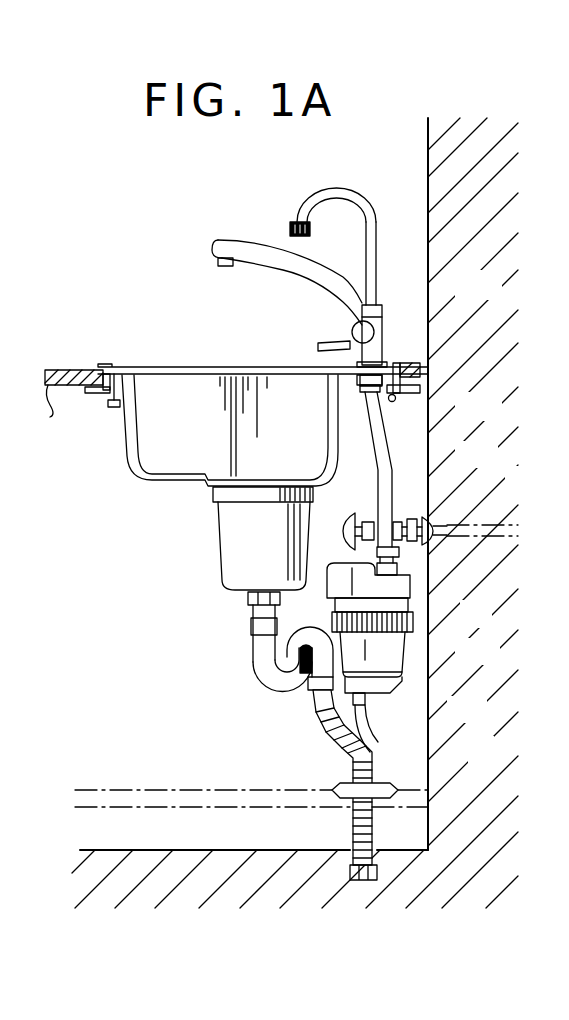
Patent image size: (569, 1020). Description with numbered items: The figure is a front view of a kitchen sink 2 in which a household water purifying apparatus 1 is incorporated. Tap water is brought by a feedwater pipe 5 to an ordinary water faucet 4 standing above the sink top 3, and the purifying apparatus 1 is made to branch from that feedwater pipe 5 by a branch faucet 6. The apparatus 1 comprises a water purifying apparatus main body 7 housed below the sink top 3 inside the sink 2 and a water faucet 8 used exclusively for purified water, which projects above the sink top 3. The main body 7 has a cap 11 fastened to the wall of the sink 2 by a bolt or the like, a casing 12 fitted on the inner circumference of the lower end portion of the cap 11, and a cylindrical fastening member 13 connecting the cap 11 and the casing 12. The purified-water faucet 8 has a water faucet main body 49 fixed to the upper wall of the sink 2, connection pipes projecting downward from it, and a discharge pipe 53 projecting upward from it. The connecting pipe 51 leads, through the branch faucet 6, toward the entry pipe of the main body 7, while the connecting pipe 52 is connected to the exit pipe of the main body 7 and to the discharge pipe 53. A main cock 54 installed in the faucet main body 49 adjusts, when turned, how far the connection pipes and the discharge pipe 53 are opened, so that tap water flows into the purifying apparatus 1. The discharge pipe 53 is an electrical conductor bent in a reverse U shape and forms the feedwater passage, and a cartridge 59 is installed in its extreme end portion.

The household water purifying apparatus 1 is at (295, 223).
The kitchen sink 2 is at (68, 370).
The sink top 3 is at (204, 387).
The water faucet 4 is at (213, 234).
The feedwater pipe 5 is at (470, 522).
The branch faucet 6 is at (344, 532).
The water purifying apparatus main body 7 is at (397, 693).
The water faucet 8 is at (336, 186).
The cap 11 is at (400, 603).
The casing 12 is at (407, 670).
The cylindrical fastening member 13 is at (417, 621).
The water faucet main body 49 is at (385, 338).
The connecting pipe 51 is at (392, 455).
The connecting pipe 52 is at (386, 414).
The discharge pipe 53 is at (362, 195).
The main cock 54 is at (341, 333).
The cartridge 59 is at (304, 200).